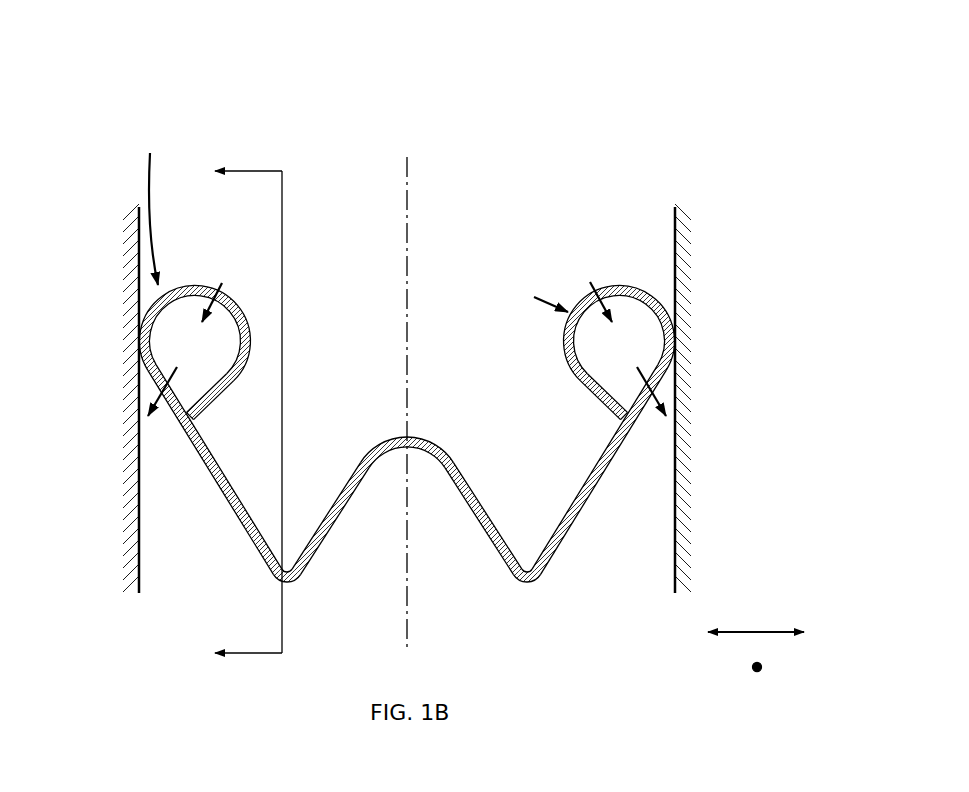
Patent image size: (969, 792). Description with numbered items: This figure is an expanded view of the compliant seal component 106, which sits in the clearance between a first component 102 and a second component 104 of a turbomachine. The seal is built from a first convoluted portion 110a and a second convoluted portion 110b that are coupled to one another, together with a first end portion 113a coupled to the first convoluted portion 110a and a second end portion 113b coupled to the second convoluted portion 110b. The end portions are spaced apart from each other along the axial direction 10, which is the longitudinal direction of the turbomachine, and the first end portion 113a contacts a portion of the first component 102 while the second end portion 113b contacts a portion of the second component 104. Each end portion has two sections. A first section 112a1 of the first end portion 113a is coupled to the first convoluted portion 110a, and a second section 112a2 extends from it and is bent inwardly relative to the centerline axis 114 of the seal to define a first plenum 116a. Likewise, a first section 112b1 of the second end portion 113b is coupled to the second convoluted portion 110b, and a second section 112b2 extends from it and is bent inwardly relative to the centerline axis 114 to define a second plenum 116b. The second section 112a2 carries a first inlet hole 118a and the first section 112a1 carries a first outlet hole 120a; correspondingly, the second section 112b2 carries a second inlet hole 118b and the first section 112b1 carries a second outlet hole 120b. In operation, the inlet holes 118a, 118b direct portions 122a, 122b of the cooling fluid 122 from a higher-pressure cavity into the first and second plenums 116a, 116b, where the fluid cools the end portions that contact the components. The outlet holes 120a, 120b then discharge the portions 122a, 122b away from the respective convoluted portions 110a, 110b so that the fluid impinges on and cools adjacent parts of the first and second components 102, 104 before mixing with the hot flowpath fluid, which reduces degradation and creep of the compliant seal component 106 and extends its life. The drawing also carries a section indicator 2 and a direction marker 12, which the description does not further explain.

The axial direction 10 is at (757, 630).
The longitudinal direction 12 is at (762, 668).
The section line 2- 2 is at (233, 415).
The first component 102 is at (139, 241).
The second component 104 is at (675, 232).
The compliant seal component 106 is at (668, 88).
The first convoluted portion 110a is at (231, 515).
The second convoluted portion 110b is at (586, 515).
The first section of the first end portion 112a1 is at (176, 287).
The second section of the first end portion 112a2 is at (199, 418).
The first section of the second end portion 112b1 is at (638, 285).
The second section of the second end portion 112b2 is at (590, 382).
The first end portion 113a is at (155, 207).
The second end portion 113b is at (522, 297).
The centerline axis 114 is at (408, 228).
The first plenum 116a is at (165, 345).
The second plenum 116b is at (636, 337).
The first inlet hole 118a is at (218, 296).
The second inlet hole 118b is at (590, 292).
The first outlet hole 120a is at (160, 395).
The second outlet hole 120b is at (656, 393).
The cooling fluid 122 is at (470, 407).
The portion of the cooling fluid 122a is at (212, 318).
The portion of the cooling fluid 122b is at (606, 318).